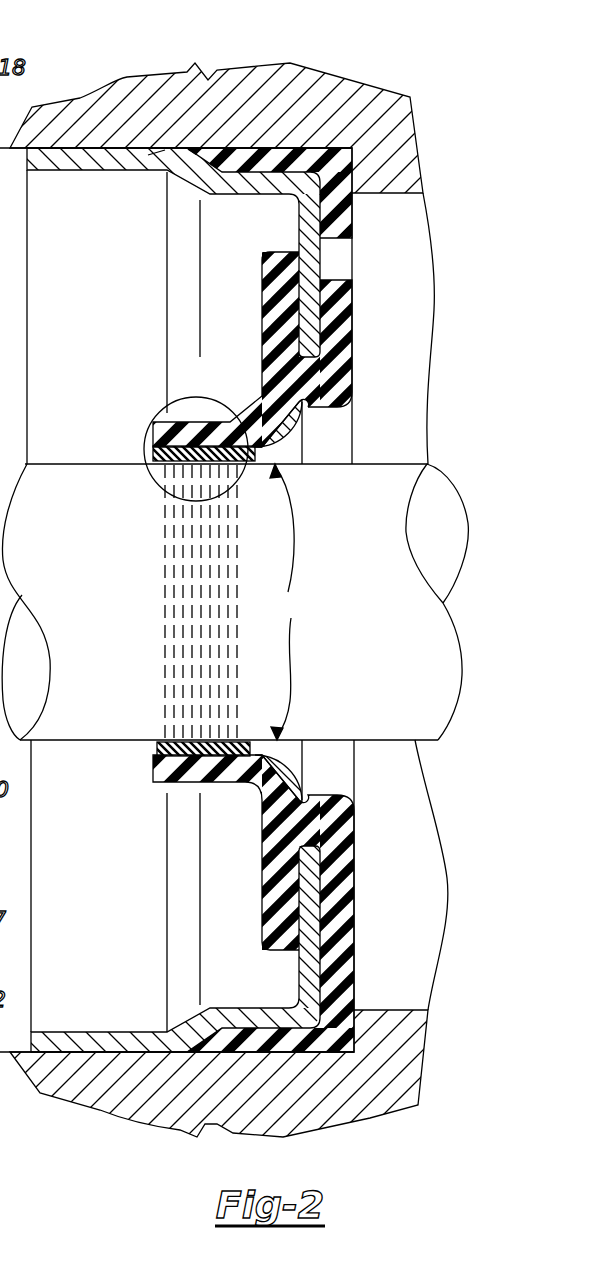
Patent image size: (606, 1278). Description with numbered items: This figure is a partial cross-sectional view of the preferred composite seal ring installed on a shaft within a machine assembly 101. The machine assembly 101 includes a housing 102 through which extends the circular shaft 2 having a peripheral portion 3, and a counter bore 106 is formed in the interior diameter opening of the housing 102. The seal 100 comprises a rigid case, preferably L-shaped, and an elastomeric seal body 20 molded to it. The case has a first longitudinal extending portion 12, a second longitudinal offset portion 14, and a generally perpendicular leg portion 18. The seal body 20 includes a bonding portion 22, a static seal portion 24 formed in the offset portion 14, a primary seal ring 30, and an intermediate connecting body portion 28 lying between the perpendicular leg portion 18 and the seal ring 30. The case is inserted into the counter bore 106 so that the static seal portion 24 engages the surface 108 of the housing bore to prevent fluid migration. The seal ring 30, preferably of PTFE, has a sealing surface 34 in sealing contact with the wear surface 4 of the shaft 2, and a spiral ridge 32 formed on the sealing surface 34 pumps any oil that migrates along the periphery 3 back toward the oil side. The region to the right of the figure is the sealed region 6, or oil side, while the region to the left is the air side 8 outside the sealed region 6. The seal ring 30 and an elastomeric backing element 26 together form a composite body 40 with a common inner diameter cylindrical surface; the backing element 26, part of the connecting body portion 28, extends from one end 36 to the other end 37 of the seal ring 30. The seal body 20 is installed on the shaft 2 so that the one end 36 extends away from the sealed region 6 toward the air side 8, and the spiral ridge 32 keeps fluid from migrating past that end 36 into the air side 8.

The shaft 2 is at (111, 624).
The periphery of the shaft 3 is at (248, 410).
The wear surface 4 is at (72, 742).
The sealed region 6 is at (411, 877).
The air side 8 is at (104, 874).
The first longitudinal extending portion 12 is at (243, 186).
The offset portion 14 is at (78, 167).
The perpendicular leg portion 18 is at (313, 265).
The elastomeric seal body 20 is at (262, 302).
The bonding portion 22 is at (312, 798).
The static seal portion 24 is at (347, 224).
The elastomeric backing element 26 is at (162, 440).
The connecting body portion 28 is at (344, 326).
The primary seal ring 30 is at (280, 602).
The spiral ridge 32 is at (170, 573).
The sealing surface 34 is at (215, 472).
The one end of the seal ring 36 is at (150, 458).
The other end of the seal ring 37 is at (304, 401).
The composite body 40 is at (254, 413).
The seal 100 is at (158, 337).
The machine assembly 101 is at (310, 97).
The housing 102 is at (124, 115).
The counter bore 106 is at (340, 128).
The surface of the bore 108 is at (153, 157).